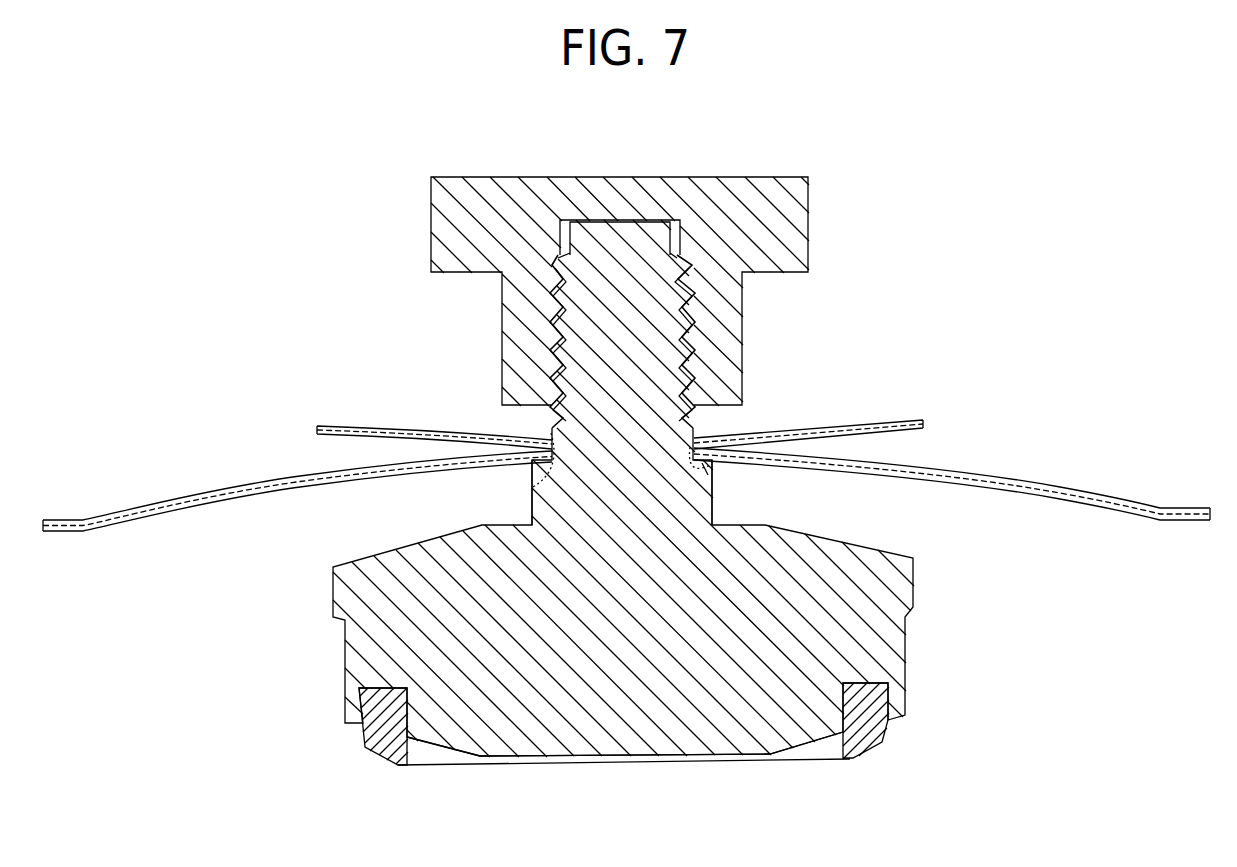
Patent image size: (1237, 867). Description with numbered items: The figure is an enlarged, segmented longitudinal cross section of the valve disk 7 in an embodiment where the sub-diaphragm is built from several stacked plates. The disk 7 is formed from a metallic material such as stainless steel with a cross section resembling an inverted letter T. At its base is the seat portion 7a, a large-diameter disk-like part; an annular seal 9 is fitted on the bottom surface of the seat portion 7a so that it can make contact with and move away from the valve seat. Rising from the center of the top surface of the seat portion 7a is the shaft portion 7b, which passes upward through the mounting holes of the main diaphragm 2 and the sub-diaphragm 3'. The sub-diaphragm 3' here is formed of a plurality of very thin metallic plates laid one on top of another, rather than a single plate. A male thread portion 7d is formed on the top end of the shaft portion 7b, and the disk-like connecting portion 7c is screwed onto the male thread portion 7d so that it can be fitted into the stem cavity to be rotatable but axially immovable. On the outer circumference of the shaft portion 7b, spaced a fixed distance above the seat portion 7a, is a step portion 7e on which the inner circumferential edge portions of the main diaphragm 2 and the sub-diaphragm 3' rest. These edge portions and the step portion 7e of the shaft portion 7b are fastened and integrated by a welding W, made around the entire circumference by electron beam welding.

The disk 7 is at (916, 648).
The seat portion 7a is at (650, 690).
The shaft portion 7b is at (620, 473).
The connecting portion 7c is at (777, 231).
The male thread portion 7d is at (683, 309).
The step portion 7e is at (700, 465).
The welding W is at (533, 487).
The sub-diaphragm 3' is at (620, 395).
The main diaphragm 2 is at (1021, 465).
The annular seal 9 is at (862, 730).